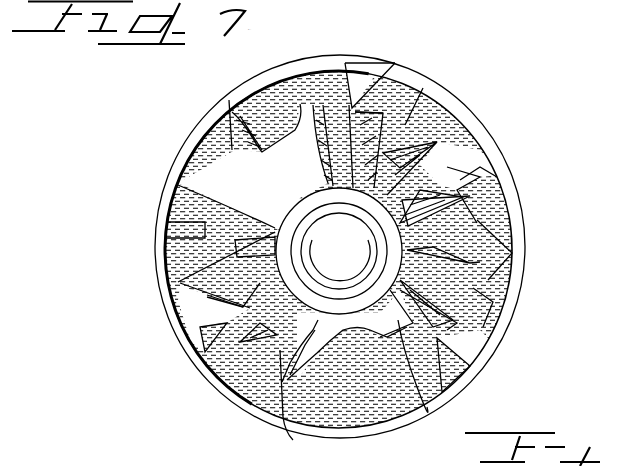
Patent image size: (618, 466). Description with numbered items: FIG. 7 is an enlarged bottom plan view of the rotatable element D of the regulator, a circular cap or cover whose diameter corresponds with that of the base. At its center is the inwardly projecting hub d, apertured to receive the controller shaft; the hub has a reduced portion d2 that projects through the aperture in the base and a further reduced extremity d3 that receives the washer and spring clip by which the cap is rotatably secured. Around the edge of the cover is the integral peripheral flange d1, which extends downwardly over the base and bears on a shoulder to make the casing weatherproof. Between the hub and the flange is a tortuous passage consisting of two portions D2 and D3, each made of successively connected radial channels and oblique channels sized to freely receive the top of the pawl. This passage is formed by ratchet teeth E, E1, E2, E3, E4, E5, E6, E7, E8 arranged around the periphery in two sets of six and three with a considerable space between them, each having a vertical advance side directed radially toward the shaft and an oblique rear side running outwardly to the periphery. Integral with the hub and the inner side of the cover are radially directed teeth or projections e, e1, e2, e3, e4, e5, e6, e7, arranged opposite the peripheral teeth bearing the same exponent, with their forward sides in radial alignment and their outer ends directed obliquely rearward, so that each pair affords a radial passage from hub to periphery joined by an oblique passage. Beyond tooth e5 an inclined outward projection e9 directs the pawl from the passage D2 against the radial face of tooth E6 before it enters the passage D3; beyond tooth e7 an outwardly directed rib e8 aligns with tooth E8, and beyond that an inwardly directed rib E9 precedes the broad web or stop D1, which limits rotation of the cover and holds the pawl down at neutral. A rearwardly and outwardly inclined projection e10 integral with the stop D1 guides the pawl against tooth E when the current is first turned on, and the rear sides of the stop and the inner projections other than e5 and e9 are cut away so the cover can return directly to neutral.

The rotatable element D is at (447, 113).
The broad web or stop D1 is at (229, 100).
The passage portion D2 is at (500, 270).
The passage portion D3 is at (267, 363).
The hub d is at (380, 275).
The peripheral flange d1 is at (445, 118).
The reduced portion of hub d2 is at (357, 210).
The reduced extremity of hub d3 is at (340, 260).
The ratchet tooth E is at (350, 92).
The ratchet tooth E1 is at (402, 122).
The ratchet tooth E2 is at (462, 158).
The ratchet tooth E3 is at (503, 228).
The ratchet tooth E4 is at (488, 303).
The ratchet tooth E5 is at (462, 380).
The ratchet tooth E6 is at (252, 382).
The ratchet tooth E7 is at (205, 328).
The ratchet tooth E8 is at (180, 265).
The inwardly directed rib E9 is at (185, 217).
The inner tooth or projection e is at (378, 112).
The inner tooth or projection e1 is at (440, 128).
The inner tooth or projection e2 is at (475, 174).
The inner tooth or projection e3 is at (480, 240).
The inner tooth or projection e4 is at (492, 328).
The inner tooth or projection e5 is at (445, 385).
The inner tooth or projection e6 is at (235, 350).
The inner tooth or projection e7 is at (207, 296).
The outwardly directed rib e8 is at (250, 247).
The inclined outward tooth or projection e9 is at (320, 350).
The inclined projection e10 is at (308, 88).